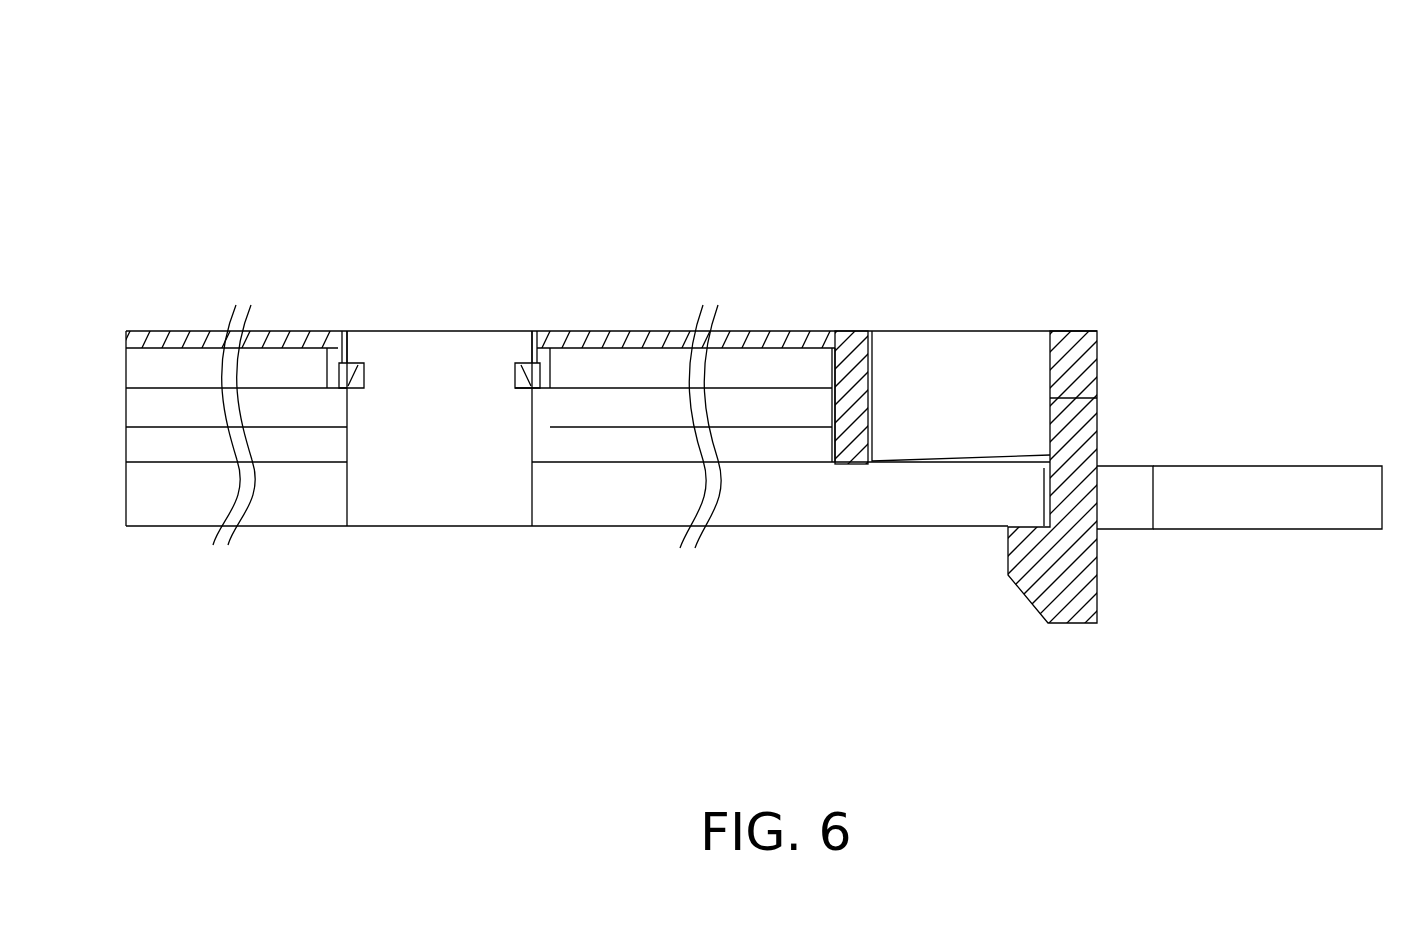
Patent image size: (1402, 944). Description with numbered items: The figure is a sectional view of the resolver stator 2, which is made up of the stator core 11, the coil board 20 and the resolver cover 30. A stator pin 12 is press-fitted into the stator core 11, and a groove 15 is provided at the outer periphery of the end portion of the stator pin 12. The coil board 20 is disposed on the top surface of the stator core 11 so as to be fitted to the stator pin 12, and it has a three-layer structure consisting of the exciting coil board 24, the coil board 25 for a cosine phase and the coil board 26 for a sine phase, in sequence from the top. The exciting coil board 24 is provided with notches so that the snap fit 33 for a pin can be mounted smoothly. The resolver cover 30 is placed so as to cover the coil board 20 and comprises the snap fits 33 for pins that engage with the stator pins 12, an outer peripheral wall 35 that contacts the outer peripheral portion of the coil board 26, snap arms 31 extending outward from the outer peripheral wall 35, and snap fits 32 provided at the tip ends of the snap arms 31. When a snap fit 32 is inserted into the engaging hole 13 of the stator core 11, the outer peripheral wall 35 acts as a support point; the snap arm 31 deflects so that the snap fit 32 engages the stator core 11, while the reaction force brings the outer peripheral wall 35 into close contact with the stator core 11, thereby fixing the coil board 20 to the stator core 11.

The resolver stator 2 is at (655, 107).
The stator core 11 is at (1268, 532).
The stator pin 12 is at (448, 330).
The engaging hole 13 is at (1123, 470).
The groove 15 is at (522, 372).
The coil board 20 is at (782, 324).
The exciting coil board 24 is at (715, 370).
The coil board for a cosine phase 25 is at (758, 413).
The coil board for a sine phase 26 is at (783, 448).
The resolver cover 30 is at (176, 331).
The snap arm 31 is at (965, 331).
The snap fit 32 is at (1073, 624).
The snap fit for a pin 33 is at (357, 372).
The outer peripheral wall 35 is at (857, 467).